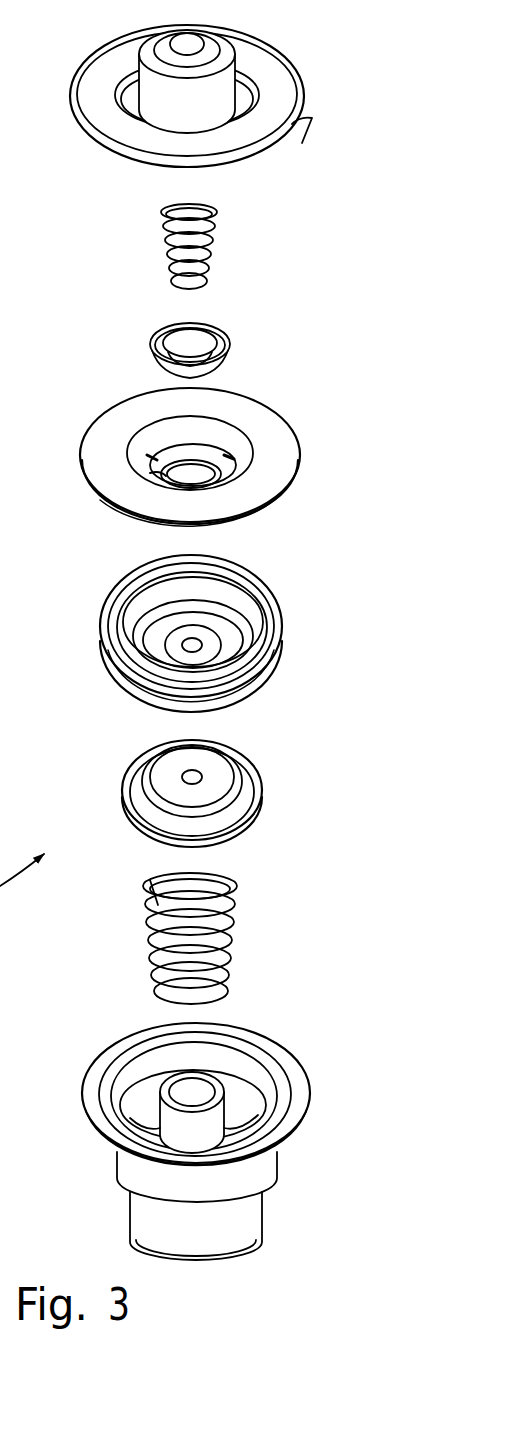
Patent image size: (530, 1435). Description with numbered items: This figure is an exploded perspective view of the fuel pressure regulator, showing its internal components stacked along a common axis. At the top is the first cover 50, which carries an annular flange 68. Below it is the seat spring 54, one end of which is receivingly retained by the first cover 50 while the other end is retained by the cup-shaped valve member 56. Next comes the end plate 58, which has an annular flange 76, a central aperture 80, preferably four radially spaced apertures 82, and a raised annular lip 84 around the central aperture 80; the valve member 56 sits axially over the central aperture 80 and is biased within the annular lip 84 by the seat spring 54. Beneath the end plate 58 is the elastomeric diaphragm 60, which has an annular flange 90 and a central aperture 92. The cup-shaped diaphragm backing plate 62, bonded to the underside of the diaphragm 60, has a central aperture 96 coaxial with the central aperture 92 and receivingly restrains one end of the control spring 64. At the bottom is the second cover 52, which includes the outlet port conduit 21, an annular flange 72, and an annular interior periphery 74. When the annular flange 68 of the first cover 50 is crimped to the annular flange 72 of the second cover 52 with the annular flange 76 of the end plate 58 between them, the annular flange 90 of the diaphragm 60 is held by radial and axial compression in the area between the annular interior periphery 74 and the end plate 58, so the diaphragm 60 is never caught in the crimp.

The first cover 50 is at (264, 64).
The annular flange 68 is at (307, 145).
The seat spring 54 is at (218, 258).
The valve member 56 is at (229, 332).
The end plate 58 is at (192, 445).
The central aperture 80 is at (192, 472).
The radially spaced apertures 82 is at (152, 457).
The raised annular lip 84 is at (153, 472).
The annular flange 76 is at (266, 501).
The diaphragm 60 is at (193, 633).
The central aperture 92 is at (188, 645).
The annular flange 90 is at (253, 667).
The diaphragm backing plate 62 is at (196, 787).
The central aperture 96 is at (187, 775).
The control spring 64 is at (242, 921).
The second cover 52 is at (192, 1134).
The annular flange 72 is at (268, 1053).
The annular interior periphery 74 is at (126, 1067).
The conduit 21 is at (228, 1110).